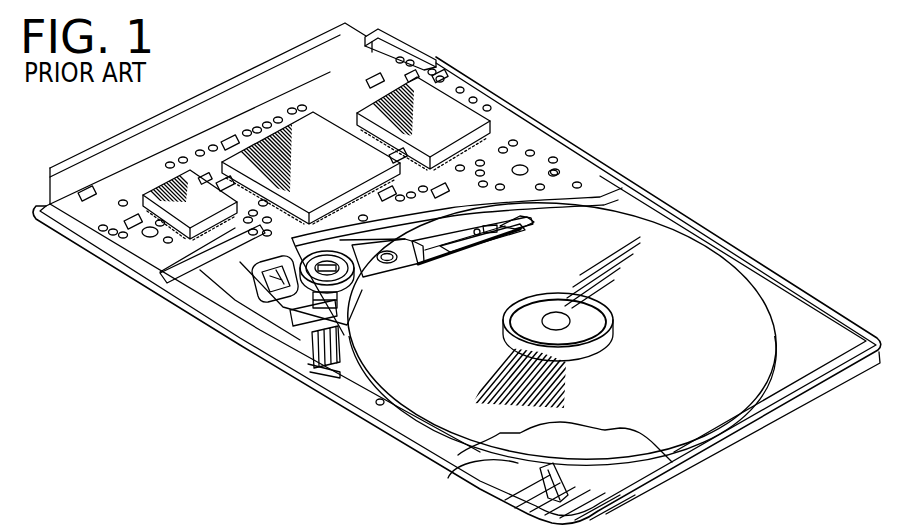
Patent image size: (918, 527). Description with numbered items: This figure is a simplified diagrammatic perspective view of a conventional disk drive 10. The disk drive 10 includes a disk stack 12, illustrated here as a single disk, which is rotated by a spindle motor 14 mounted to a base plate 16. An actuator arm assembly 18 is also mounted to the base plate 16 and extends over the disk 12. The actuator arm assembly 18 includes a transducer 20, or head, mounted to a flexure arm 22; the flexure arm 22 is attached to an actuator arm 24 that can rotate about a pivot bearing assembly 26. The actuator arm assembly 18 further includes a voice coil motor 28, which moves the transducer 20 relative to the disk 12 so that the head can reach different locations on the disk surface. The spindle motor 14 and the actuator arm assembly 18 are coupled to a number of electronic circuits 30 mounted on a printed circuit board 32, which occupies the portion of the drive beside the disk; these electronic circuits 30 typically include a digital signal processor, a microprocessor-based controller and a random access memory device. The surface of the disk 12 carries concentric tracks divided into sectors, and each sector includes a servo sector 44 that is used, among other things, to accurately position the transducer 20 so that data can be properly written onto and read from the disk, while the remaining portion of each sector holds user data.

The disk drive 10 is at (607, 145).
The disk stack 12 is at (745, 282).
The spindle motor 14 is at (597, 328).
The base plate 16 is at (800, 328).
The actuator arm assembly 18 is at (492, 253).
The transducer 20 is at (536, 220).
The flexure arm 22 is at (447, 252).
The actuator arm 24 is at (370, 267).
The pivot bearing assembly 26 is at (355, 285).
The voice coil motor 28 is at (253, 280).
The electronic circuits 30 is at (187, 209).
The printed circuit board 32 is at (336, 96).
The servo sector 44 is at (485, 478).